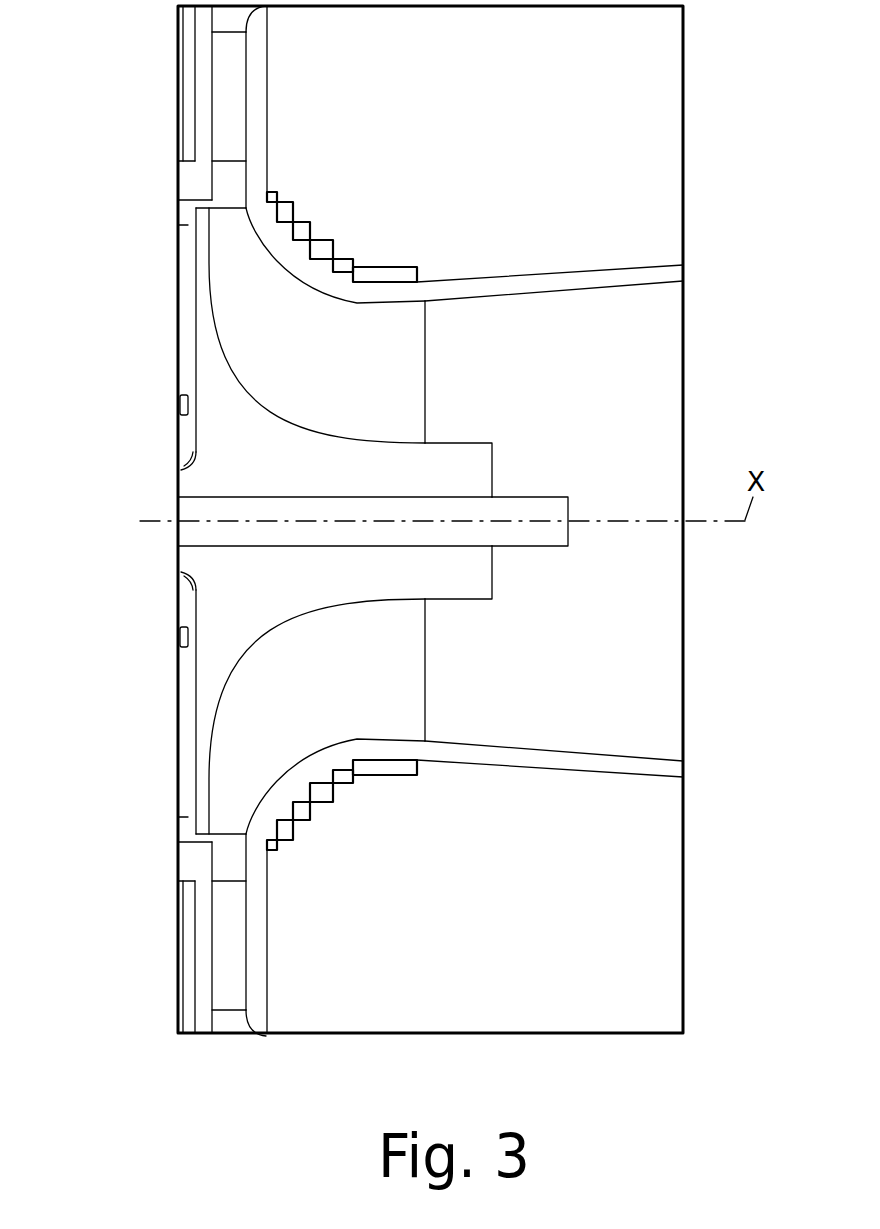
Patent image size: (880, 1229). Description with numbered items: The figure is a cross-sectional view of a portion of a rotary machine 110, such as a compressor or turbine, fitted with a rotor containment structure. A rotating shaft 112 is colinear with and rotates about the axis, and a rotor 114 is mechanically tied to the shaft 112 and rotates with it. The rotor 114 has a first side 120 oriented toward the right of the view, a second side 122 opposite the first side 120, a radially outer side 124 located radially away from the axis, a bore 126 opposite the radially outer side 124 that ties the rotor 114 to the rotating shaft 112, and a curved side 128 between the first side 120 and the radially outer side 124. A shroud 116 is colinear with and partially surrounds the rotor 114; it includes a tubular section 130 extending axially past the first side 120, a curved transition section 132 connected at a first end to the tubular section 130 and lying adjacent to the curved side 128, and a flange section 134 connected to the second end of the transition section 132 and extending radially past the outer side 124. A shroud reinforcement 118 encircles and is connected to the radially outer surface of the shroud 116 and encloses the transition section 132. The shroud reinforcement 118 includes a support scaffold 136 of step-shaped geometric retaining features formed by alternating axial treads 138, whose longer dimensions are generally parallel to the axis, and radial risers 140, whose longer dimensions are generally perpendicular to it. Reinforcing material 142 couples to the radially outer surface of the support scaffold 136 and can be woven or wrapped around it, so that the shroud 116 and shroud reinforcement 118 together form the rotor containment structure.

The rotary machine 110 is at (430, 519).
The rotating shaft 112 is at (547, 503).
The rotor 114 is at (448, 465).
The shroud 116 is at (533, 283).
The shroud reinforcement 118 is at (327, 795).
The first side 120 is at (427, 353).
The second side 122 is at (195, 344).
The radially outer side 124 is at (229, 206).
The bore 126 is at (205, 497).
The curved side 128 is at (265, 248).
The tubular section 130 is at (487, 287).
The transition section 132 is at (307, 265).
The flange section 134 is at (258, 77).
The support scaffold 136 is at (343, 770).
The axial treads 138 is at (300, 800).
The radial risers 140 is at (290, 803).
The reinforcing material 142 is at (387, 772).